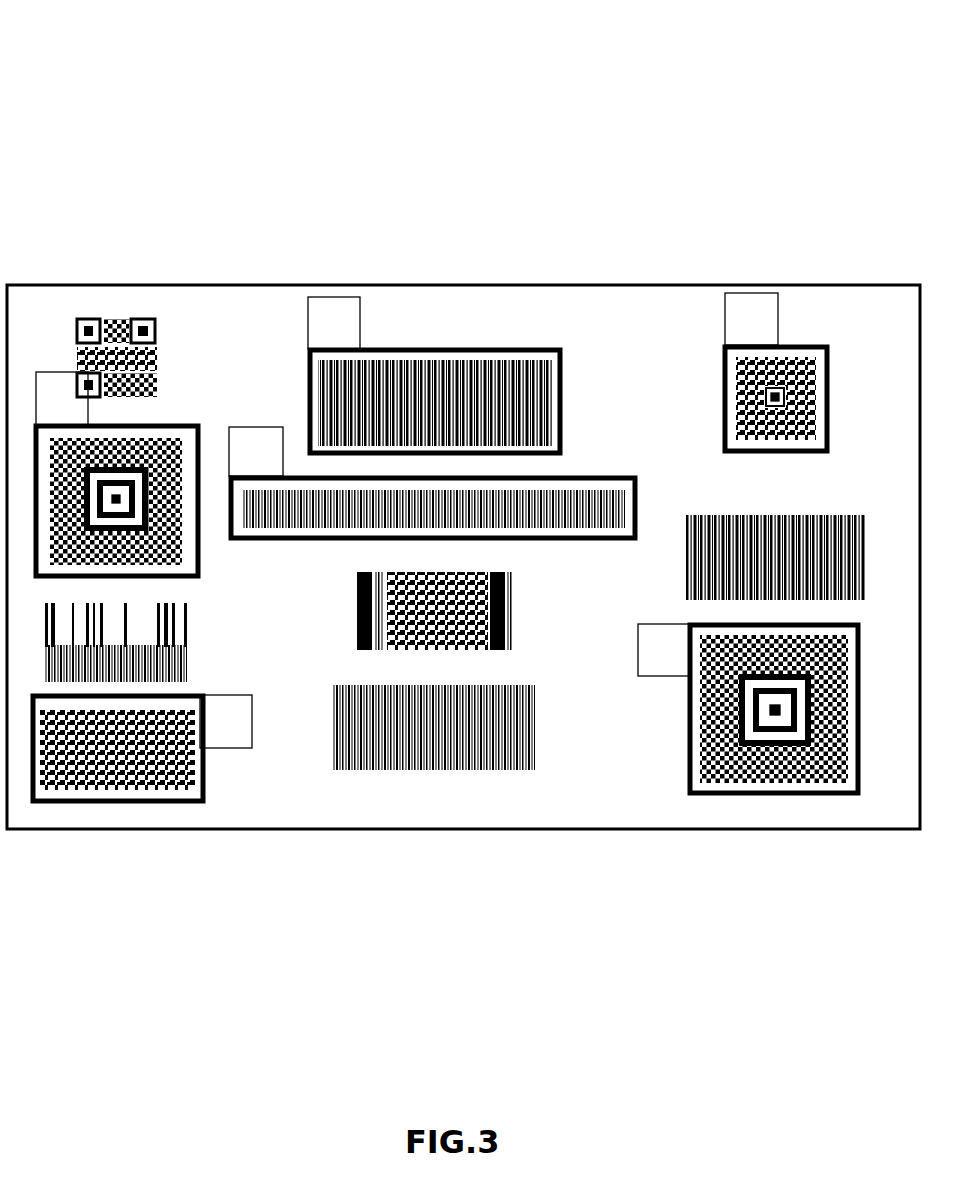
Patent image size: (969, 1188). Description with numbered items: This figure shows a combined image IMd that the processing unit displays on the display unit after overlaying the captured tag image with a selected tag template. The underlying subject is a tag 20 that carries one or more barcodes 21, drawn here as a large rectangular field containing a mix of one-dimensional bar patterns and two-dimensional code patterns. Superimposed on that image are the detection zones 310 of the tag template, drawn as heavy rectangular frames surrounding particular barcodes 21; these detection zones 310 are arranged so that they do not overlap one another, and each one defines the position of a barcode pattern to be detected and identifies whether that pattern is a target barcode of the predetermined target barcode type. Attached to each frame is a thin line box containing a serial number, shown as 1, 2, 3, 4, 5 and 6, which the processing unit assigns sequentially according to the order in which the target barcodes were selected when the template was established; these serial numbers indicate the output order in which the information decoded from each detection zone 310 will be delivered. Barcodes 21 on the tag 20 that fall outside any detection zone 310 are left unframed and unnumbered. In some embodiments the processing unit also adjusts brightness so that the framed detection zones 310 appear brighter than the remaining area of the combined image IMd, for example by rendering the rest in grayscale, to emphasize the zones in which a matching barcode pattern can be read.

The tag 20 is at (727, 287).
The barcodes 21 is at (505, 378).
The detection zones 310 is at (428, 352).
The combined image IMd is at (197, 185).
The serial number of detection zone 1 is at (334, 323).
The serial number of detection zone 2 is at (432, 482).
The serial number of detection zone 3 is at (117, 474).
The serial number of detection zone 4 is at (776, 372).
The serial number of detection zone 5 is at (664, 650).
The serial number of detection zone 6 is at (226, 721).